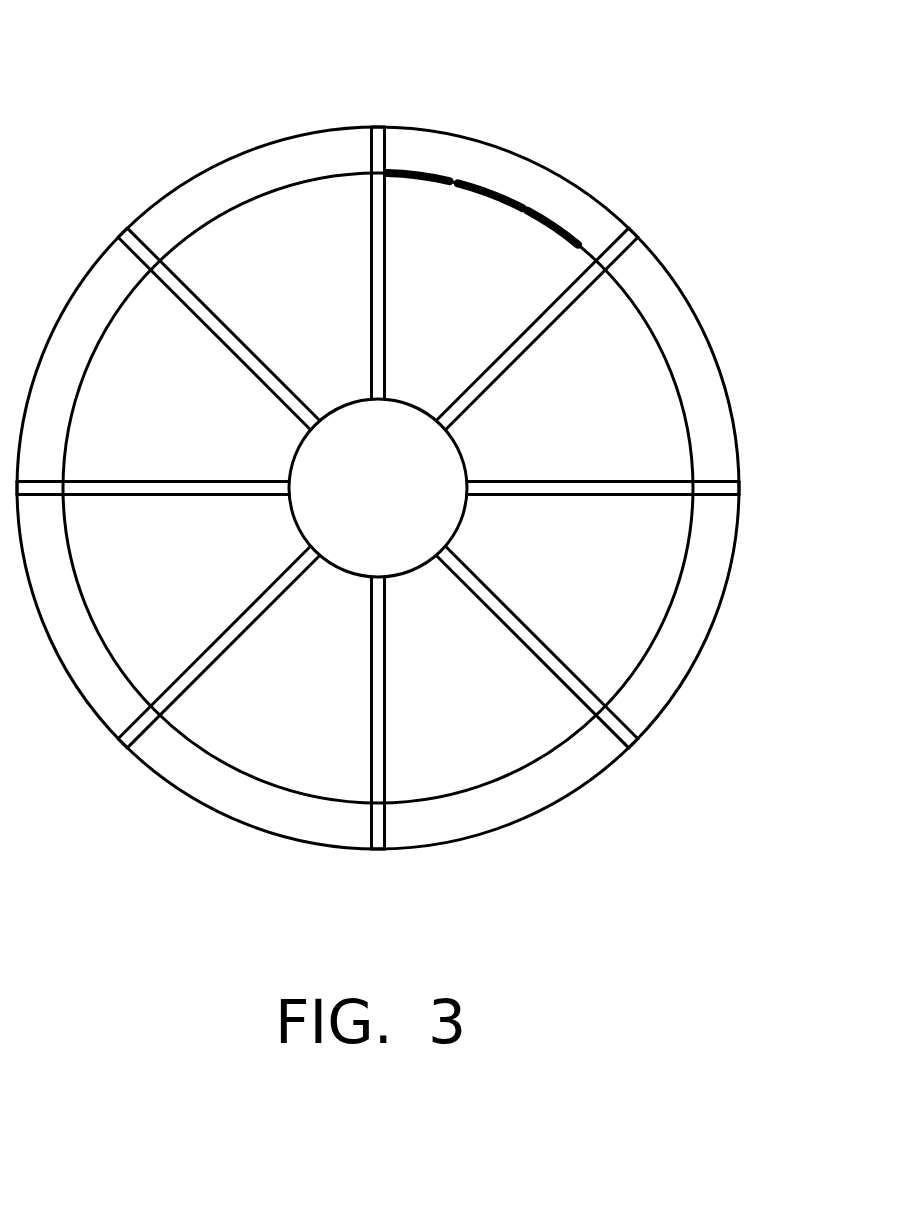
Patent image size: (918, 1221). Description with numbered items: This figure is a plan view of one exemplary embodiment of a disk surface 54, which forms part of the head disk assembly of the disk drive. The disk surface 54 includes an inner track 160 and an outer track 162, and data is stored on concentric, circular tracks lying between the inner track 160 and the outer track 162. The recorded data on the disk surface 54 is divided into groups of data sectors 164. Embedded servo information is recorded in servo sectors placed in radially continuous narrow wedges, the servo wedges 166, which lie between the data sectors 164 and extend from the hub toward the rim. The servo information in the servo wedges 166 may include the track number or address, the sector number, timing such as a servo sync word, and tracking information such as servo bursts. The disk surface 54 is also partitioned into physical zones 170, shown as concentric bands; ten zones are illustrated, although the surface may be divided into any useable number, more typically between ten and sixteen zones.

The disk surface 54 is at (180, 22).
The inner track 160 is at (510, 444).
The outer track 162 is at (683, 407).
The data sectors 164 is at (437, 172).
The servo wedges 166 is at (377, 142).
The physical zones 170 is at (402, 653).